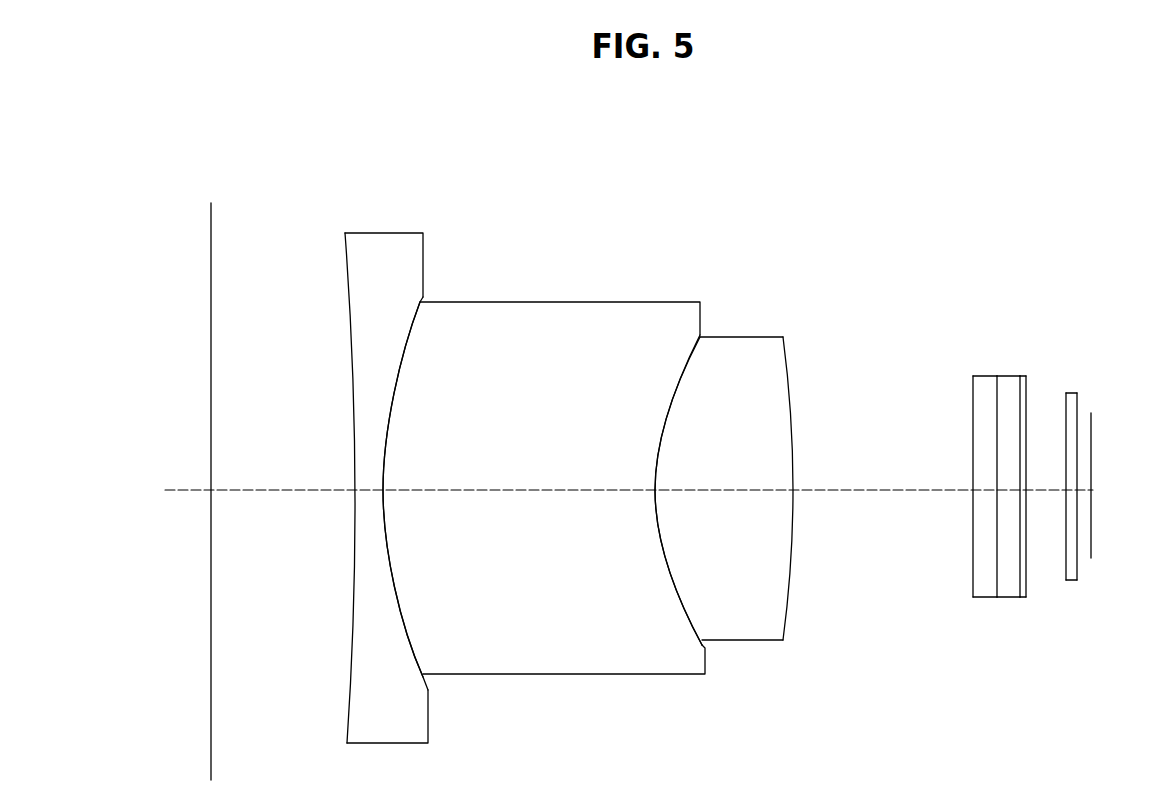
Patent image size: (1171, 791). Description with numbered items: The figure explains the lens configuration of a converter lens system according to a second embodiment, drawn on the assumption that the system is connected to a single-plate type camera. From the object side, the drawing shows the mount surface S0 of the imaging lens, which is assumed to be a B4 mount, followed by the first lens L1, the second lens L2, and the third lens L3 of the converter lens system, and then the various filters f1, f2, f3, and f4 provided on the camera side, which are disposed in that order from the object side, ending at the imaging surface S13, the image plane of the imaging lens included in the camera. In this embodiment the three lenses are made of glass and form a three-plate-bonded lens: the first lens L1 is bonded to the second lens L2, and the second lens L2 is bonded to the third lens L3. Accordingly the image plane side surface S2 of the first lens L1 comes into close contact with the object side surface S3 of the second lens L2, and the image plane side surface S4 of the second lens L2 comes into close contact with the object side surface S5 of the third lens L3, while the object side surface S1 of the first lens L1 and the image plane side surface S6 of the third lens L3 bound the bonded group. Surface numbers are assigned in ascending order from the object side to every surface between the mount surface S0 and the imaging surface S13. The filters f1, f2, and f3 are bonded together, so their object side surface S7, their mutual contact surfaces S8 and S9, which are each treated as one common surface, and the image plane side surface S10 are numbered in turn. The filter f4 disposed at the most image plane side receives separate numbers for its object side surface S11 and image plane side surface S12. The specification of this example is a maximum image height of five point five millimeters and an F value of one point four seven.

The mount surface S0 is at (239, 476).
The object side surface of first lens S1 is at (321, 477).
The image plane side surface of first lens S2 is at (415, 426).
The object side surface of second lens S3 is at (427, 440).
The image plane side surface of second lens S4 is at (657, 429).
The object side surface of third lens S5 is at (691, 430).
The image plane side surface of third lens S6 is at (806, 442).
The object side surface of filter f1 S7 is at (946, 435).
The common surface between filters f1 and f2 S8 is at (982, 449).
The common surface between filters f2 and f3 S9 is at (1016, 449).
The image plane side surface of filter f3 S10 is at (1055, 460).
The object side surface of filter f4 S11 is at (1048, 537).
The image plane side surface of filter f4 S12 is at (1120, 527).
The imaging surface S13 is at (1110, 443).
The first lens L1 is at (366, 453).
The second lens L2 is at (544, 426).
The third lens L3 is at (742, 410).
The filter f1 is at (958, 471).
The filter f2 is at (1005, 493).
The filter f3 is at (1047, 517).
The filter f4 is at (1098, 537).